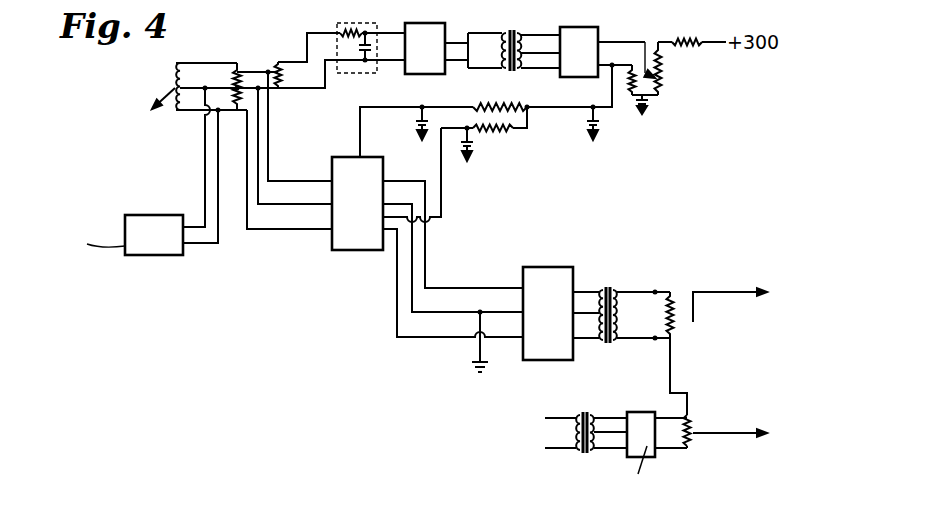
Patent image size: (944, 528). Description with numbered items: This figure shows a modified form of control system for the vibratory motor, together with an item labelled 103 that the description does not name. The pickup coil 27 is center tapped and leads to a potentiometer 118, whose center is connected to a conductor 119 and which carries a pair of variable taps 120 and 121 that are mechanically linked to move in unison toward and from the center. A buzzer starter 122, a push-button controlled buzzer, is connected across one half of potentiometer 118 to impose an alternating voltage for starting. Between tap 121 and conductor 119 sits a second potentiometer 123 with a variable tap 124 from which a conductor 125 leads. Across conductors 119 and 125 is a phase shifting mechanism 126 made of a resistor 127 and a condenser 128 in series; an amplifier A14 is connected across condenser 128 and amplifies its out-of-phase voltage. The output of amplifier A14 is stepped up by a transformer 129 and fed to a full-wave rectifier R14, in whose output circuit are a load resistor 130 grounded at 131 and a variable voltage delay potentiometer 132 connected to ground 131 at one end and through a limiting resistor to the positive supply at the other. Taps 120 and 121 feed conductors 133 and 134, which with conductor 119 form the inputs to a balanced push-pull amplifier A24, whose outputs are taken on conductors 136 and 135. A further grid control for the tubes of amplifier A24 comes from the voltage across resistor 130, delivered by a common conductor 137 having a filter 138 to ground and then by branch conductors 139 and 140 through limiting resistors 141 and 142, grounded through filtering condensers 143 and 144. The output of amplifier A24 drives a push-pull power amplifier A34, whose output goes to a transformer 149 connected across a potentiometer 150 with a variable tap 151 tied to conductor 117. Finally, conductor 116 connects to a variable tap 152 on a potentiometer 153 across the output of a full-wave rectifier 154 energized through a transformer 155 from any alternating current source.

The pickup coil 27 is at (173, 112).
The potentiometer 118 is at (181, 81).
The variable tap 121 is at (248, 66).
The second potentiometer 123 is at (279, 60).
The conductor 125 is at (308, 33).
The resistor 127 is at (351, 31).
The phase shifting mechanism 126 is at (387, 20).
The condenser 128 is at (371, 48).
The variable tap 124 is at (294, 76).
The conductor 119 is at (298, 91).
The variable tap 120 is at (241, 106).
The conductor 134 is at (283, 179).
The conductor 133 is at (246, 218).
The buzzer starter 122 is at (155, 246).
The amplifier A14 is at (453, 48).
The transformer 129 is at (515, 82).
The full-wave rectifier R14 is at (602, 52).
The branch conductor 139 is at (383, 107).
The limiting resistor 141 is at (503, 104).
The filtering condenser 143 is at (415, 122).
The limiting resistor 142 is at (500, 132).
The filtering condenser 144 is at (473, 143).
The branch conductor 140 is at (442, 183).
The common conductor 137 is at (548, 110).
The filter 138 is at (600, 130).
The load resistor 130 is at (630, 97).
The ground 131 is at (648, 108).
The variable voltage delay potentiometer 132 is at (660, 72).
The balanced amplifier A24 is at (320, 250).
The conductor 136 is at (424, 260).
The conductor 135 is at (400, 338).
The power amplifier A34 is at (585, 262).
The transformer 149 is at (619, 281).
The potentiometer 150 is at (667, 305).
The variable tap 151 is at (685, 318).
The conductor 117 is at (738, 292).
The potentiometer 153 is at (690, 447).
The full-wave rectifier 154 is at (636, 421).
The transformer 155 is at (582, 466).
The variable tap 152 is at (698, 423).
The conductor 116 is at (734, 433).
The circuit 103 is at (254, 512).